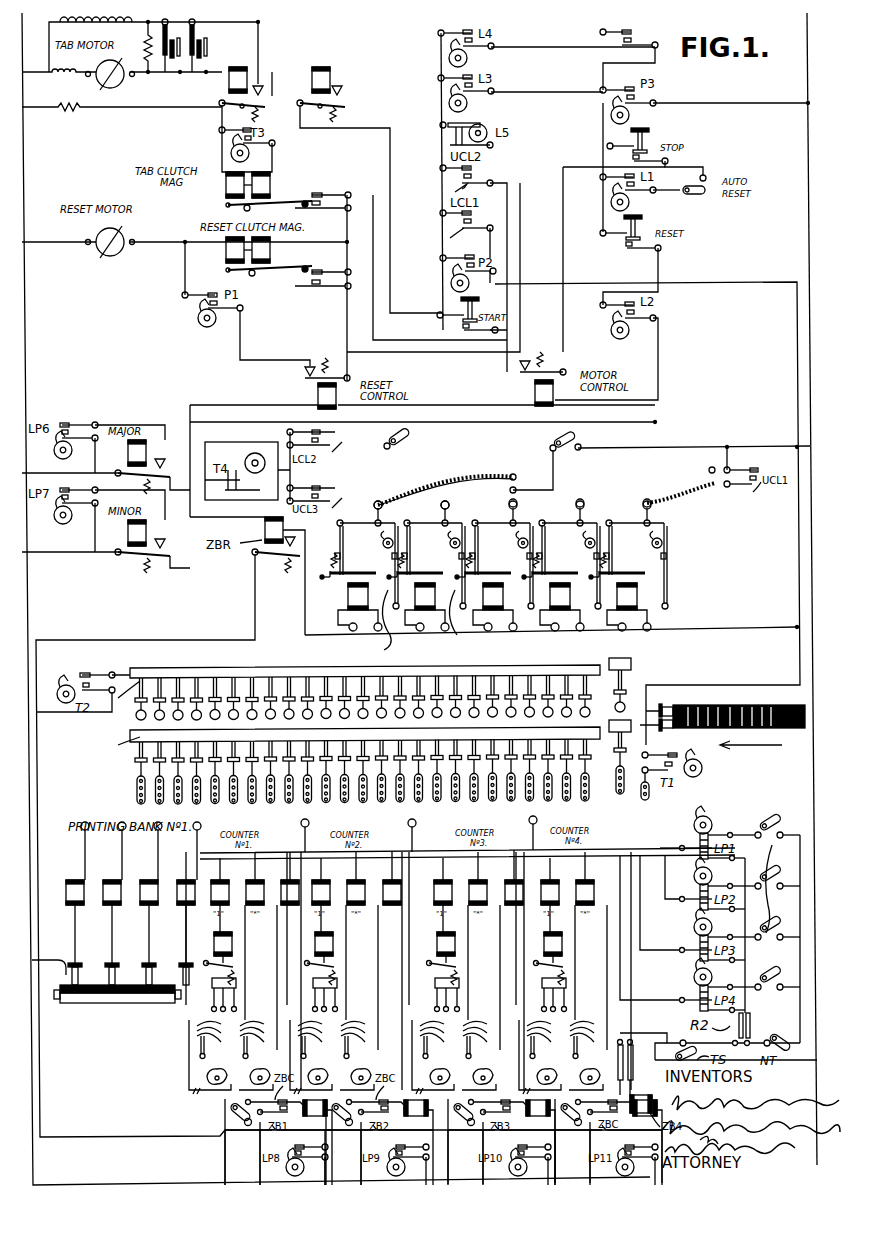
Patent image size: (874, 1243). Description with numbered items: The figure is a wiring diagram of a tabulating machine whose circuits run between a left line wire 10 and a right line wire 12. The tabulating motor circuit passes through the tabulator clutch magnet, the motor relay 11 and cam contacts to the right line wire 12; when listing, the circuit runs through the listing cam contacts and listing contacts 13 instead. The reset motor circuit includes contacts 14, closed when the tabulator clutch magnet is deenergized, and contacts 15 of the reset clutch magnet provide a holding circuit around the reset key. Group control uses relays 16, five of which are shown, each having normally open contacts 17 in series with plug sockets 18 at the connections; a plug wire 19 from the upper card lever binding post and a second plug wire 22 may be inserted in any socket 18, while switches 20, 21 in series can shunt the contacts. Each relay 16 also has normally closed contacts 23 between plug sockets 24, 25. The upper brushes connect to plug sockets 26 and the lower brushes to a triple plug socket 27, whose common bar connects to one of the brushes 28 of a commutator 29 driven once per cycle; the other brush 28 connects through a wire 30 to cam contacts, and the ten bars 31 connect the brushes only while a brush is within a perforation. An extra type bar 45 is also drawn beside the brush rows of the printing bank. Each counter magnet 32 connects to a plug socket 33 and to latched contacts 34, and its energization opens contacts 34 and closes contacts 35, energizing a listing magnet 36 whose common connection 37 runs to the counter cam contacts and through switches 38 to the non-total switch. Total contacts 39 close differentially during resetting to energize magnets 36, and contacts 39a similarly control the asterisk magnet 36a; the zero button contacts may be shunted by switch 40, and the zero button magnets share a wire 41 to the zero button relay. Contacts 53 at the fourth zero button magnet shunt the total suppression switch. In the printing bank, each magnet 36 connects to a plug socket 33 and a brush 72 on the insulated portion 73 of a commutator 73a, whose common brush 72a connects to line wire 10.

The left line wire 10 is at (24, 179).
The motor relay 11 is at (325, 81).
The right line wire 12 is at (808, 141).
The listing contacts 13 is at (640, 36).
The contacts 14 is at (318, 198).
The contacts 15 is at (308, 282).
The relay 16 is at (348, 598).
The contacts 17 is at (370, 547).
The plug socket 18 is at (449, 505).
The plug wire 19 is at (676, 480).
The switch 20 is at (400, 436).
The switch 21 is at (556, 445).
The plug wire 22 is at (440, 480).
The contacts 23 is at (396, 650).
The plug socket 24 is at (353, 631).
The plug socket 25 is at (378, 631).
The plug socket 26 is at (361, 735).
The triple plug socket 27 is at (140, 788).
The brush 28 is at (668, 710).
The commutator 29 is at (788, 732).
The wire 30 is at (758, 283).
The bars 31 is at (710, 735).
The counter magnet 32 is at (233, 943).
The plug socket 33 is at (196, 828).
The contacts 34 is at (208, 987).
The contacts 35 is at (229, 987).
The listing magnet 36 is at (115, 890).
The asterisk magnet 36a is at (258, 884).
The common connection 37 is at (282, 856).
The switch 38 is at (773, 889).
The total contacts 39 is at (212, 1030).
The contacts 39a is at (290, 1011).
The switch 40 is at (228, 1116).
The wire 41 is at (200, 641).
The type bar 45 is at (622, 735).
The spring contact members 53 is at (630, 1080).
The brush 72 is at (120, 970).
The common brush 72a is at (62, 962).
The insulated portion 73 is at (106, 991).
The commutator 73a is at (138, 1003).